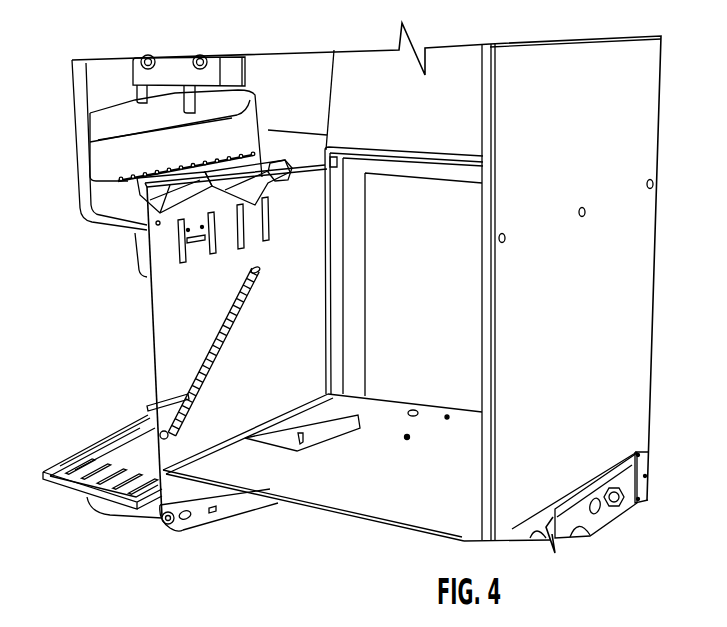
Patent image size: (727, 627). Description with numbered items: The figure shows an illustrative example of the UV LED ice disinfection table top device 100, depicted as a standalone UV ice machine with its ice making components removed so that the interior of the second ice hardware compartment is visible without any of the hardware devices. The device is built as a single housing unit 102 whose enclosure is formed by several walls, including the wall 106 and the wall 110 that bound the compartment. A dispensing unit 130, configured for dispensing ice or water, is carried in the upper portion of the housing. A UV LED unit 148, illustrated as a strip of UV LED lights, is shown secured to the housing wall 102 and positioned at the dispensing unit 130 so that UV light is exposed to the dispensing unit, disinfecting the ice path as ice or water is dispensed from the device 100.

The UV LED ice disinfection table top device 100 is at (101, 316).
The housing unit 102 is at (148, 334).
The wall 106 is at (637, 334).
The wall 110 is at (368, 500).
The dispensing unit 130 is at (123, 234).
The UV LED unit 148 is at (166, 392).